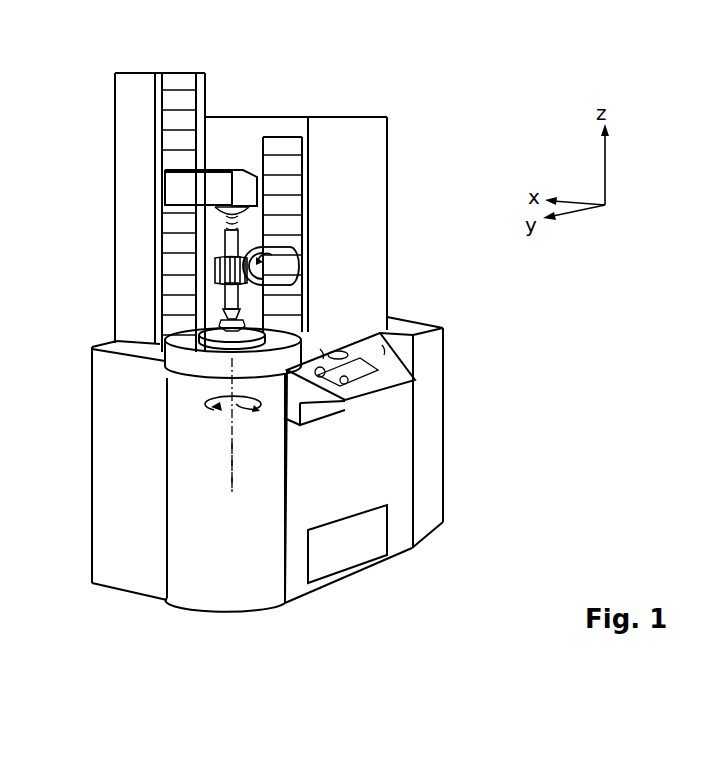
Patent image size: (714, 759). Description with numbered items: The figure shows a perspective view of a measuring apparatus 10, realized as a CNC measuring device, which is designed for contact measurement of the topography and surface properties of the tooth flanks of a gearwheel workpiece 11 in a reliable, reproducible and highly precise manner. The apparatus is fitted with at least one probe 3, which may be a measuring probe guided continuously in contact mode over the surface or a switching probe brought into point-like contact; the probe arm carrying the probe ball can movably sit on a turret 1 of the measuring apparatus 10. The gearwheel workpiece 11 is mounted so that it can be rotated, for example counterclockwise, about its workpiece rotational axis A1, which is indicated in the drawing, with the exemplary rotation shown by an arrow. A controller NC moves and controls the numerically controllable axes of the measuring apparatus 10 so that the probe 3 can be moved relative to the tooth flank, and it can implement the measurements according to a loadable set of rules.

The measuring apparatus 10 is at (465, 56).
The turret 1 is at (338, 180).
The measuring probe 3 is at (268, 256).
The gearwheel workpiece 11 is at (215, 273).
The controller NC is at (348, 543).
The workpiece rotational axis A1 is at (232, 479).